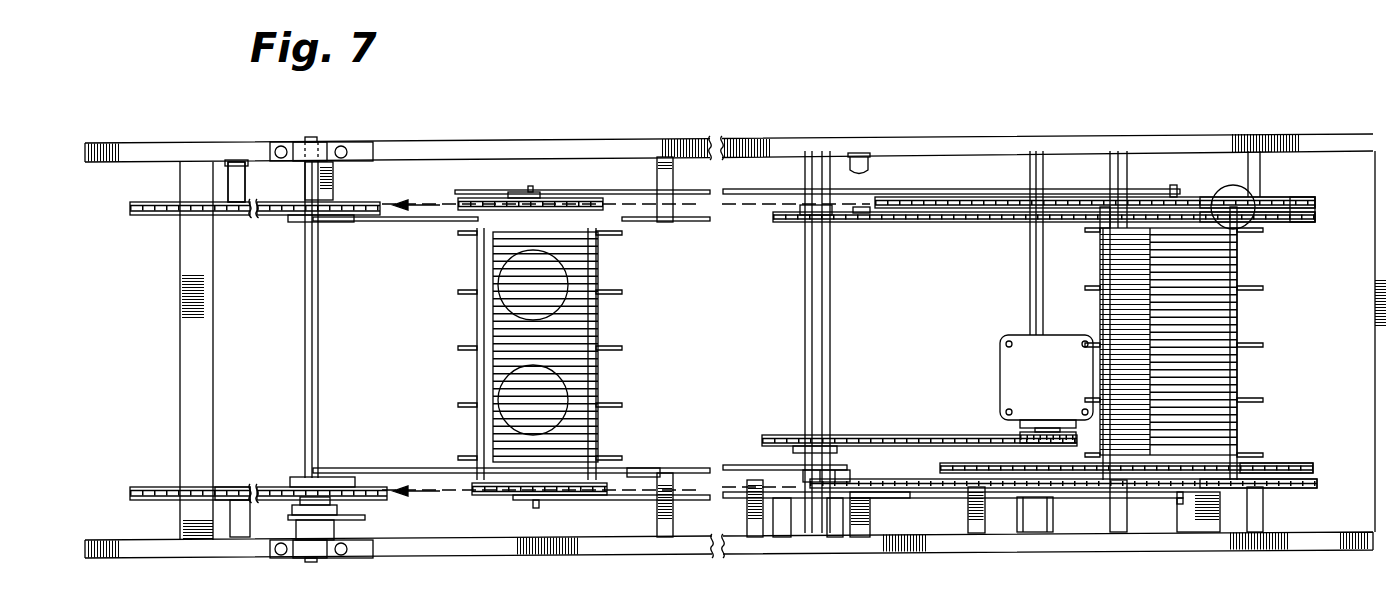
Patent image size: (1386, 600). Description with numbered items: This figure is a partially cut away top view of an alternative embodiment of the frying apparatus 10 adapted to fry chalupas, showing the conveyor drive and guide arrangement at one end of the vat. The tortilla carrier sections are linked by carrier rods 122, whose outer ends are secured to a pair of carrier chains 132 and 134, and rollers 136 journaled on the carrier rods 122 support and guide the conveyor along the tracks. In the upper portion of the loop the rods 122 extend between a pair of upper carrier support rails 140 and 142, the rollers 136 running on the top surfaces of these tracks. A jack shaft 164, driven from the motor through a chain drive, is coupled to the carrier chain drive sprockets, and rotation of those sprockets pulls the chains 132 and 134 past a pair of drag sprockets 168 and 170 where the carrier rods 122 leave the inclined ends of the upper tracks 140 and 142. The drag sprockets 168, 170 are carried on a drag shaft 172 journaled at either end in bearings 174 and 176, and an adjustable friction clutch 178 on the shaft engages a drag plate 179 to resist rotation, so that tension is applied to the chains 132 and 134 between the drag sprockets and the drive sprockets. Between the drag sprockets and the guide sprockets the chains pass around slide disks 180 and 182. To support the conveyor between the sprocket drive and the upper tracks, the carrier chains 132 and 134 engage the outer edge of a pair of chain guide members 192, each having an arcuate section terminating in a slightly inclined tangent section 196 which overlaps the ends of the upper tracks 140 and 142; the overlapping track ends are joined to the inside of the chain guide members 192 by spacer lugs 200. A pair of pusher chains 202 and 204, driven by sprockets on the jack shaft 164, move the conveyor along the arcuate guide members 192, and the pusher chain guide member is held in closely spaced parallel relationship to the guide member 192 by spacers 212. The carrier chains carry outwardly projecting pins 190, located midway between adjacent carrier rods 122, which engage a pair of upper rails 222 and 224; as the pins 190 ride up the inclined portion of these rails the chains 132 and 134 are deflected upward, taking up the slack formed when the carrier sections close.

The apparatus 10 is at (1243, 182).
The carrier rod 122 is at (1240, 373).
The carrier chain 132 is at (237, 202).
The carrier chain 134 is at (228, 487).
The roller 136 is at (1265, 463).
The upper carrier support rail 140 is at (660, 222).
The upper carrier support rail 142 is at (628, 468).
The jack shaft 164 is at (830, 338).
The drag sprocket 168 is at (282, 216).
The drag sprocket 170 is at (355, 487).
The drag shaft 172 is at (318, 326).
The bearing 174 is at (318, 143).
The bearing 176 is at (318, 562).
The adjustable friction clutch 178 is at (288, 548).
The drag plate 179 is at (365, 520).
The slide disk 180 is at (150, 216).
The slide disk 182 is at (165, 487).
The pin 190 is at (532, 192).
The chain guide member 192 is at (1305, 202).
The tangent section 196 is at (888, 210).
The spacer lug 200 is at (848, 470).
The pusher chain 202 is at (1302, 223).
The pusher chain 204 is at (1295, 465).
The spacer 212 is at (1305, 216).
The upper rail 222 is at (868, 192).
The upper rail 224 is at (897, 498).